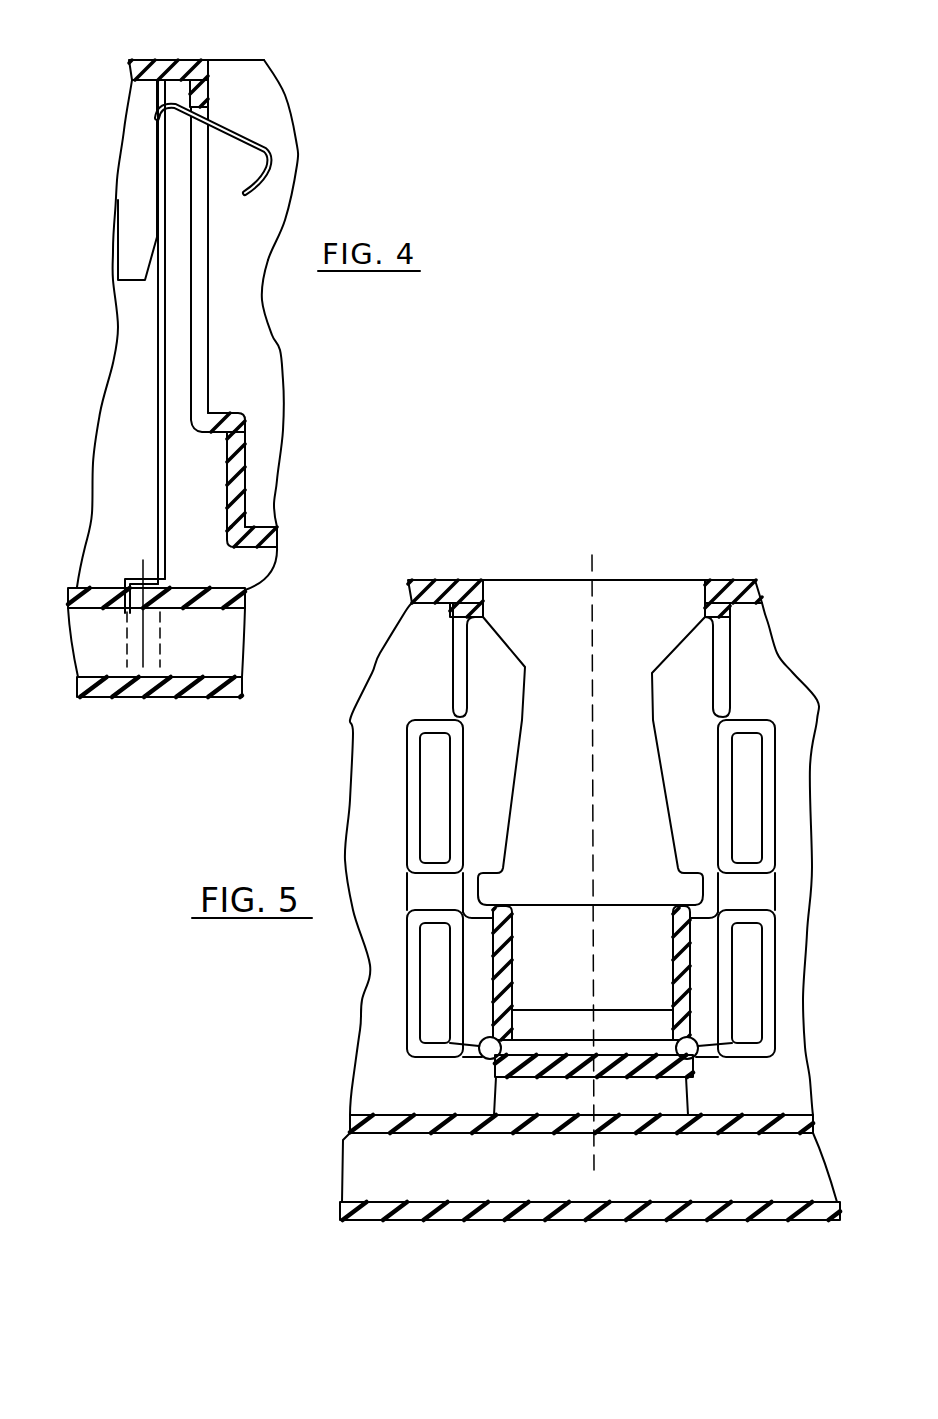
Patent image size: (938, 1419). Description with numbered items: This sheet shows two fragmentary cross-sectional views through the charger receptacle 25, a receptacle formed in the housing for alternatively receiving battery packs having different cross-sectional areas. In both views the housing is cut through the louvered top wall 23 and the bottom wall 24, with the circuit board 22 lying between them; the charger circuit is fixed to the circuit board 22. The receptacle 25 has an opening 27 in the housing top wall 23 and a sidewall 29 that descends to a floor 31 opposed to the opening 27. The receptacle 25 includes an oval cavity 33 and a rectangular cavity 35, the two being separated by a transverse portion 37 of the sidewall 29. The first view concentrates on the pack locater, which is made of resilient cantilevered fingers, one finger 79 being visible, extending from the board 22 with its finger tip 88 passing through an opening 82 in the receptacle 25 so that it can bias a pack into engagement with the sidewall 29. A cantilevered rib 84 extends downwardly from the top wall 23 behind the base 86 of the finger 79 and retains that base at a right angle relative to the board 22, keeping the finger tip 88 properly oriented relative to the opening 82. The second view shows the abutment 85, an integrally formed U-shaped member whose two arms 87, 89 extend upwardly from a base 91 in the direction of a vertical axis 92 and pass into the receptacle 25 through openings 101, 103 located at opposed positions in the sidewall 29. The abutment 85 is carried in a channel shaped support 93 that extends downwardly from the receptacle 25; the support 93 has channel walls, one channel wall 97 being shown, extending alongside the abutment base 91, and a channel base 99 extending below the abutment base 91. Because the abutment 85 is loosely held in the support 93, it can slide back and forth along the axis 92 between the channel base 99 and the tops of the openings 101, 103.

In FIG. 4, the circuit board 22 is at (100, 598).
In FIG. 5, the circuit board 22 is at (356, 1124).
In FIG. 4, the louvered top wall 23 is at (148, 70).
In FIG. 5, the louvered top wall 23 is at (585, 598).
In FIG. 4, the bottom wall 24 is at (93, 687).
In FIG. 5, the bottom wall 24 is at (358, 1212).
In FIG. 4, the receptacle 25 is at (341, 77).
In FIG. 5, the receptacle 25 is at (661, 498).
In FIG. 4, the opening 27 is at (240, 60).
In FIG. 5, the opening 27 is at (690, 580).
In FIG. 4, the sidewall 29 is at (277, 202).
In FIG. 5, the sidewall 29 is at (615, 842).
In FIG. 4, the floor 31 is at (272, 545).
In FIG. 4, the oval cavity 33 is at (265, 93).
In FIG. 5, the oval cavity 33 is at (502, 600).
In FIG. 4, the rectangular cavity 35 is at (257, 487).
In FIG. 5, the rectangular cavity 35 is at (633, 928).
In FIG. 4, the transverse portion of sidewall 37 is at (229, 413).
In FIG. 5, the transverse portion of sidewall 37 is at (494, 905).
In FIG. 4, the resilient cantilevered finger 79 is at (149, 314).
In FIG. 4, the opening 82 is at (202, 291).
In FIG. 4, the cantilevered rib 84 is at (140, 154).
In FIG. 5, the abutment 85 is at (631, 608).
In FIG. 4, the base of finger 86 is at (162, 387).
In FIG. 5, the arm 87 is at (498, 723).
In FIG. 4, the finger tip 88 is at (260, 140).
In FIG. 5, the arm 89 is at (658, 717).
In FIG. 5, the base 91 is at (473, 1047).
In FIG. 5, the vertical axis 92 is at (591, 662).
In FIG. 5, the channel shaped support 93 is at (543, 1092).
In FIG. 5, the channel wall 97 is at (683, 997).
In FIG. 5, the channel base 99 is at (677, 1068).
In FIG. 5, the opening 101 is at (458, 663).
In FIG. 5, the opening 103 is at (722, 660).